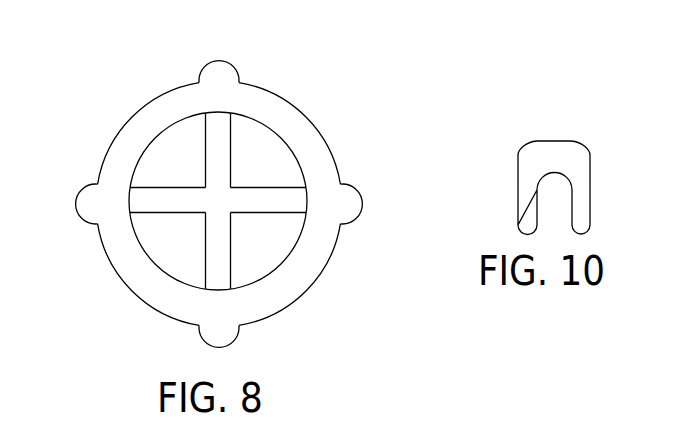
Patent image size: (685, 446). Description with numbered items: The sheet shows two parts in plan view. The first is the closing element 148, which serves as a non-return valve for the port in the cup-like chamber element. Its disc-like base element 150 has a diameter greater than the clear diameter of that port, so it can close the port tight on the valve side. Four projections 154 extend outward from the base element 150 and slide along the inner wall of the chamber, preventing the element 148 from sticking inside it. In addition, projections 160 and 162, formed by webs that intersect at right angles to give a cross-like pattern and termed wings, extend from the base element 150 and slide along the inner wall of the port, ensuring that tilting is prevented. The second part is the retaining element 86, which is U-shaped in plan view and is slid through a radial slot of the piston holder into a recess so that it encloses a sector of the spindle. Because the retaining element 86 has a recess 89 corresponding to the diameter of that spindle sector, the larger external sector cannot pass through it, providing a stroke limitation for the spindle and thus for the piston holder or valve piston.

In FIG. 8, the element 148 is at (239, 198).
In FIG. 8, the disc-like base element 150 is at (267, 105).
In FIG. 8, the projections 154 is at (216, 72).
In FIG. 8, the projection (wing) 160 is at (275, 193).
In FIG. 8, the projection (wing) 162 is at (222, 235).
In FIG. 10, the retaining element 86 is at (558, 158).
In FIG. 10, the recess 89 is at (563, 188).